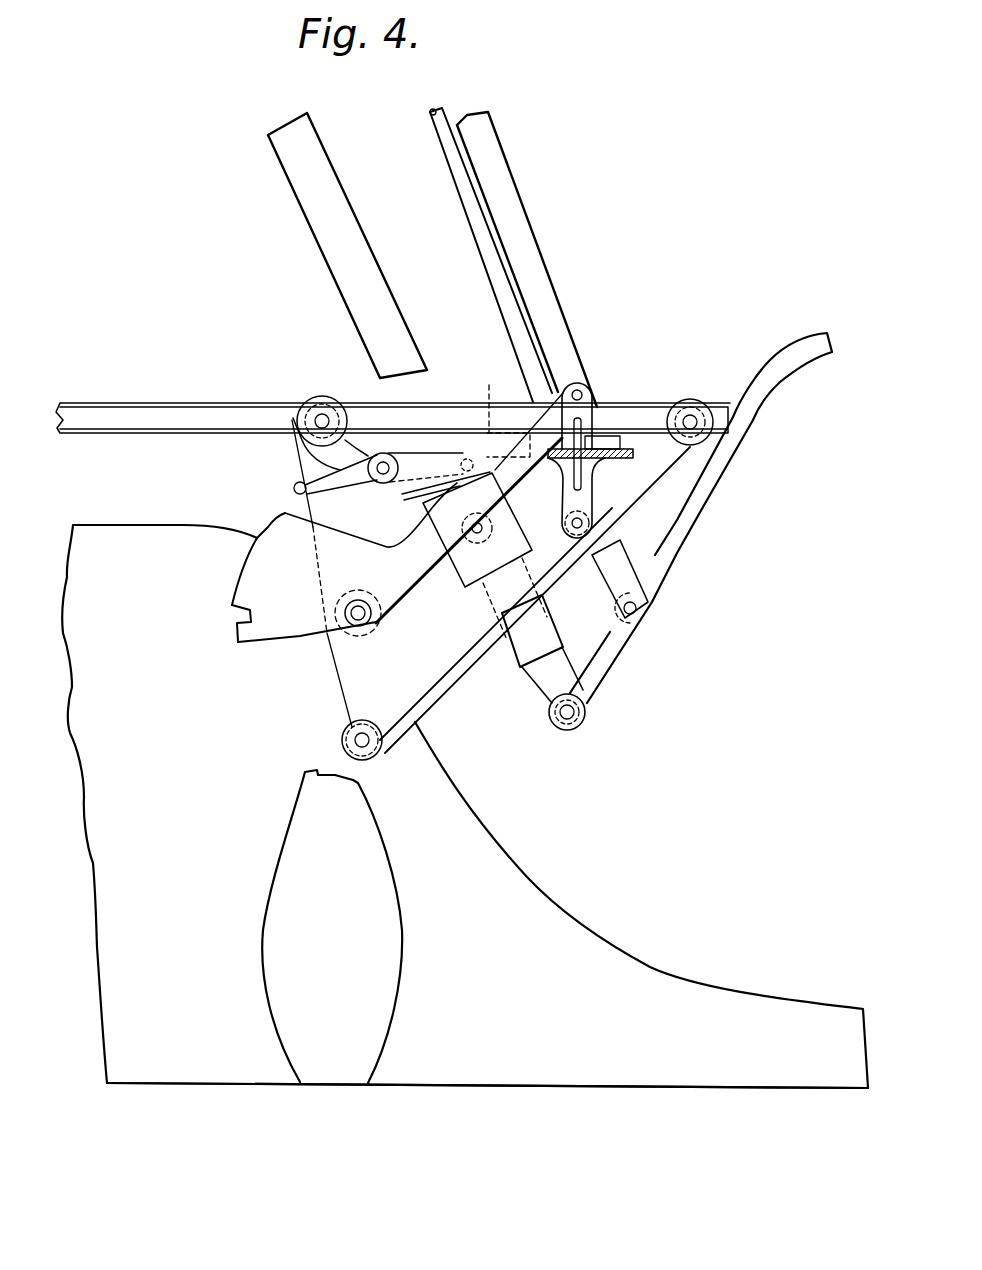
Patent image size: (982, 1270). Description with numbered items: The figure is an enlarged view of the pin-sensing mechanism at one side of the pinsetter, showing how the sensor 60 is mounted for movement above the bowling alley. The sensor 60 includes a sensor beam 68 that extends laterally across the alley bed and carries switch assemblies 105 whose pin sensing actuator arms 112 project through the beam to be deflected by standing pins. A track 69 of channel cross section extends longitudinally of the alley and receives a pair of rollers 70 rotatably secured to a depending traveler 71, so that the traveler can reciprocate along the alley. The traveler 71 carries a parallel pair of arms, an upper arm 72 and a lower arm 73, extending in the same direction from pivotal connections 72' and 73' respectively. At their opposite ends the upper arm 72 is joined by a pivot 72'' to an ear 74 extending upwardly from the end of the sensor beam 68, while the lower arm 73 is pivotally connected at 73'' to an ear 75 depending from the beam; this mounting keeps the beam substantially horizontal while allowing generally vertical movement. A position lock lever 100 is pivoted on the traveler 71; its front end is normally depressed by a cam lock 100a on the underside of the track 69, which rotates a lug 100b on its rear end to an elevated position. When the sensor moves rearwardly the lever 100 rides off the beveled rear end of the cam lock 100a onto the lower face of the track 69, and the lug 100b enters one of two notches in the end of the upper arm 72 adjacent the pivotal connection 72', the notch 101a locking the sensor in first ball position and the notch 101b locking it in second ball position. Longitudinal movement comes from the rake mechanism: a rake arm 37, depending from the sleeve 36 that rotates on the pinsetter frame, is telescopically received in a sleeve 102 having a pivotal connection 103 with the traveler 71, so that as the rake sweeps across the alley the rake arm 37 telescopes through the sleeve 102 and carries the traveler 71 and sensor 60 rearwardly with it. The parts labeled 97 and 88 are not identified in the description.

The wiper plate 97 is at (322, 224).
The wiper arm 88 is at (538, 232).
The roller 70 is at (335, 412).
The position lock lever 100 is at (284, 420).
The cam lock 100a is at (464, 440).
The lug 100b is at (293, 486).
The sleeve 36 is at (450, 490).
The ear 74 is at (560, 425).
The track 69 is at (552, 448).
The traveler 71 is at (335, 662).
The notch 101a is at (245, 617).
The notch 101b is at (250, 518).
The upper arm 72 is at (280, 590).
The pivotal connection 72' is at (330, 633).
The pivot 72'' is at (600, 372).
The lower arm 73 is at (336, 730).
The pivotal connection 73' is at (384, 771).
The pivotal connection 73'' is at (584, 558).
The pivotal connection 103 is at (460, 575).
The sleeve 102 is at (457, 582).
The rake supporting rod 37 is at (520, 642).
The sensor mechanism 60 is at (638, 480).
The ear 75 is at (565, 482).
The switch assembly 105 is at (610, 438).
The pin sensing actuator arm 112 is at (605, 434).
The sensor beam 68 is at (605, 460).